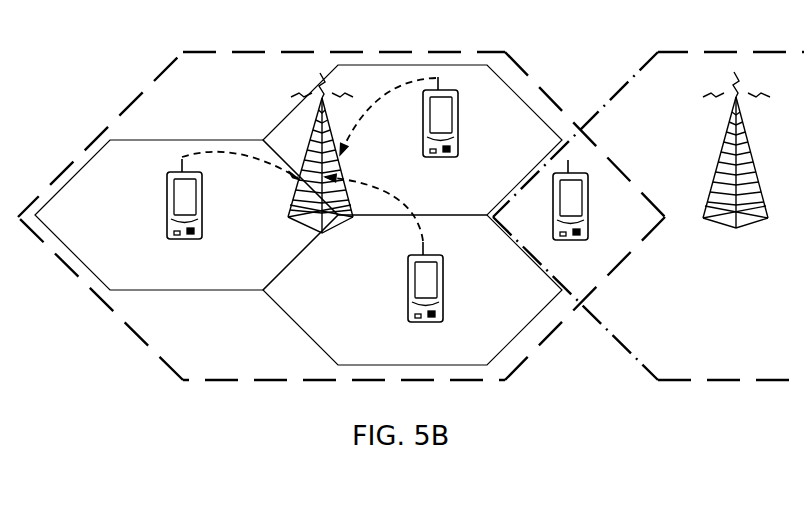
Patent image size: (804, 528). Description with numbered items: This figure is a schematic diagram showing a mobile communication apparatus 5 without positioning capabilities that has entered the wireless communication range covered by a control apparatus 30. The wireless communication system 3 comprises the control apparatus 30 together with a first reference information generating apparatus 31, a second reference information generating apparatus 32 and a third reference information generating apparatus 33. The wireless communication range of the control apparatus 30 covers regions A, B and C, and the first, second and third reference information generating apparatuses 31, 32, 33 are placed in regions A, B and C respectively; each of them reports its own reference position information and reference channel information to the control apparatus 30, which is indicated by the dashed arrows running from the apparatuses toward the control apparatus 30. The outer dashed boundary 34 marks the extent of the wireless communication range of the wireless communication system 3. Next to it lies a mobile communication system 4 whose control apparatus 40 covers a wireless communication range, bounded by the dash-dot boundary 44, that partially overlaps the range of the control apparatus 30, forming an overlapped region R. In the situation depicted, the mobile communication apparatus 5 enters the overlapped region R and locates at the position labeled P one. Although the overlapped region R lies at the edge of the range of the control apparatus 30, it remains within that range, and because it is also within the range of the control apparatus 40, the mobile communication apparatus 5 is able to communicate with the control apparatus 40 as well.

The wireless communication system 3 is at (341, 216).
The mobile communication system 4 is at (648, 204).
The mobile communication apparatus 5 is at (590, 205).
The control apparatus 30 is at (307, 127).
The first reference information generating apparatus 31 is at (167, 190).
The second reference information generating apparatus 32 is at (422, 107).
The third reference information generating apparatus 33 is at (410, 272).
The boundary of first cell 34 is at (341, 216).
The control apparatus 40 is at (725, 145).
The boundary of second cell 44 is at (625, 346).
The overlapped region R is at (613, 277).